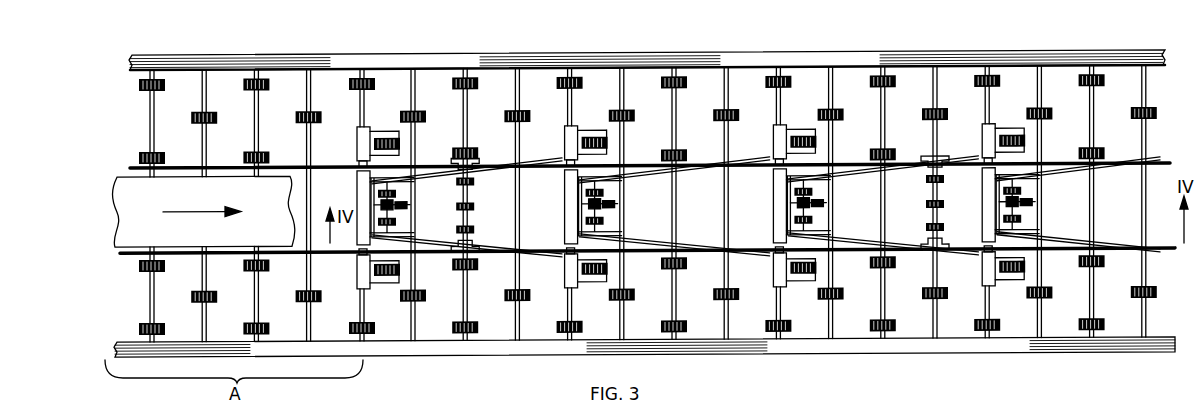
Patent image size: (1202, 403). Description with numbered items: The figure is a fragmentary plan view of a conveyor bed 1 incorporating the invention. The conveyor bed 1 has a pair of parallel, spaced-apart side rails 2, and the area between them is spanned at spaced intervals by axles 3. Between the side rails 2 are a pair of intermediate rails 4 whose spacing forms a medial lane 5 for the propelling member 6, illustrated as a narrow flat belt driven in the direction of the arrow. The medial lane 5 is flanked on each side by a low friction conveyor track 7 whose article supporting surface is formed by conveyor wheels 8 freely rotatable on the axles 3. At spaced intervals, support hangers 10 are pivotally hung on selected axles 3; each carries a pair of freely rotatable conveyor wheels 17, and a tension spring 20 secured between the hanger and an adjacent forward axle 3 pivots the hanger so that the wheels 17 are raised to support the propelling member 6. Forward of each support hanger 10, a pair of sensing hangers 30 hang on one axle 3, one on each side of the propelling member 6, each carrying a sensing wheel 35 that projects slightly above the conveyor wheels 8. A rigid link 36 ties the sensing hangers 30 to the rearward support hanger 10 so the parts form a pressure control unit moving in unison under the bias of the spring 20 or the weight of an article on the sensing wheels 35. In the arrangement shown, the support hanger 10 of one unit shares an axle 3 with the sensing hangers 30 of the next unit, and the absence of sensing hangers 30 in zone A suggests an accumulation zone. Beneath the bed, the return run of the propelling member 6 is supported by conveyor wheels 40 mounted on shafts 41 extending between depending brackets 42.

The conveyor bed 1 is at (622, 197).
The side rails 2 is at (752, 60).
The axles 3 is at (572, 117).
The intermediate rails 4 is at (137, 168).
The medial lane 5 is at (1143, 220).
The propelling member 6 is at (132, 213).
The conveyor track 7 is at (127, 117).
The conveyor wheels 8 is at (367, 72).
The support hanger 10 is at (367, 187).
The conveyor wheels 17 is at (393, 202).
The tension spring 20 is at (407, 210).
The sensing hangers 30 is at (565, 136).
The sensing wheel 35 is at (612, 142).
The link 36 is at (532, 255).
The conveyor wheels 40 is at (478, 208).
The shafts 41 is at (472, 195).
The depending brackets 42 is at (475, 247).